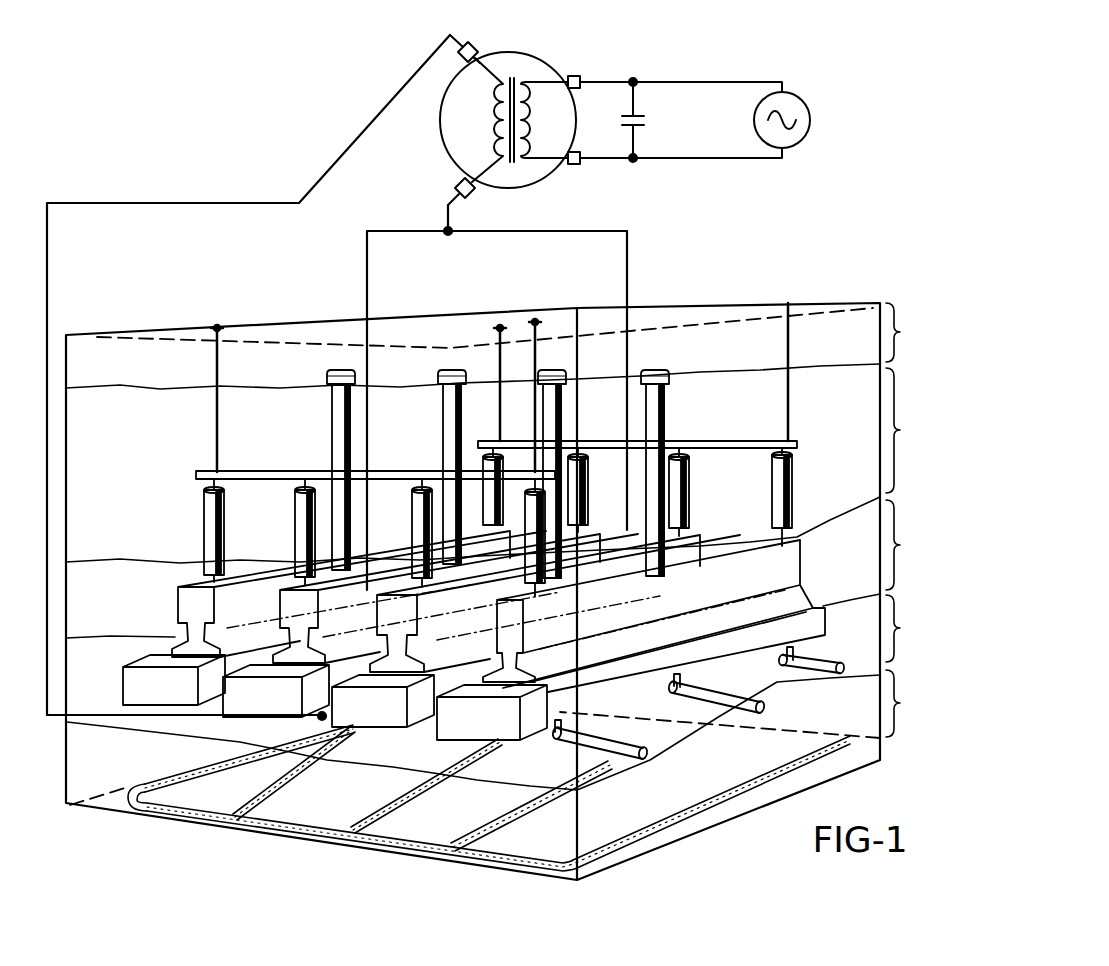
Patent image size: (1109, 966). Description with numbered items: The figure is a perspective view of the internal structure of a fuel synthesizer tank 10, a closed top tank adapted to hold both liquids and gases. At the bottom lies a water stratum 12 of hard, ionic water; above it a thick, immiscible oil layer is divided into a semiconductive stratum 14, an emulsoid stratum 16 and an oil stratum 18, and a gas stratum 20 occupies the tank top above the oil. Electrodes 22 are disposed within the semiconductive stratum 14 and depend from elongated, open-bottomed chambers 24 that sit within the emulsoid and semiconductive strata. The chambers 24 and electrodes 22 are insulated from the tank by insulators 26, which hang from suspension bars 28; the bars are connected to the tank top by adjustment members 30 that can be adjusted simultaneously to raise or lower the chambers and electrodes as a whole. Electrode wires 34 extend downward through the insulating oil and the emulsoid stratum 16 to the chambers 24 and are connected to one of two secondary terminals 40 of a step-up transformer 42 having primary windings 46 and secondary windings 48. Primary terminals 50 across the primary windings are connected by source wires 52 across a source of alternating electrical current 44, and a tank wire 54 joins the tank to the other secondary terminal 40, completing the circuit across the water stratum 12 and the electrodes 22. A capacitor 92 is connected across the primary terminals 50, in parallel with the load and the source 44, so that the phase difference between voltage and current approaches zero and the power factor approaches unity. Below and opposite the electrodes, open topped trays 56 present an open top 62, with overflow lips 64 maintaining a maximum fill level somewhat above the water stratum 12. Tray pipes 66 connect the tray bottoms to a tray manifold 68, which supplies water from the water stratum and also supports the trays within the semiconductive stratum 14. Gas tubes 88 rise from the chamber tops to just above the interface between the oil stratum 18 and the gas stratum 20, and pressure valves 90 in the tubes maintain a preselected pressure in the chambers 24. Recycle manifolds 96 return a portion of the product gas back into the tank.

The closed top tank 10 is at (805, 300).
The water stratum 12 is at (904, 703).
The semiconductive stratum 14 is at (904, 628).
The emulsoid stratum 16 is at (907, 545).
The oil stratum 18 is at (907, 430).
The gas stratum 20 is at (907, 332).
The electrodes 22 is at (196, 655).
The elongated chambers 24 is at (178, 600).
The insulators 26 is at (294, 530).
The suspension bars 28 is at (245, 471).
The adjustment members 30 is at (216, 440).
The electrode wires 34 is at (448, 224).
The secondary terminals 40 is at (472, 42).
The transformer 42 is at (568, 42).
The source of alternating electrical current 44 is at (800, 100).
The primary windings 46 is at (527, 135).
The secondary windings 48 is at (495, 100).
The primary terminals 50 is at (580, 78).
The source wires 52 is at (700, 155).
The tank wire 54 is at (389, 102).
The open topped tray 56 is at (125, 690).
The open top 62 is at (123, 670).
The overflow lips 64 is at (405, 700).
The tray pipes 66 is at (788, 660).
The tray manifold 68 is at (527, 745).
The gas tubes 88 is at (440, 447).
The pressure valves 90 is at (335, 372).
The capacitor 92 is at (630, 115).
The recycle manifolds 96 is at (690, 790).